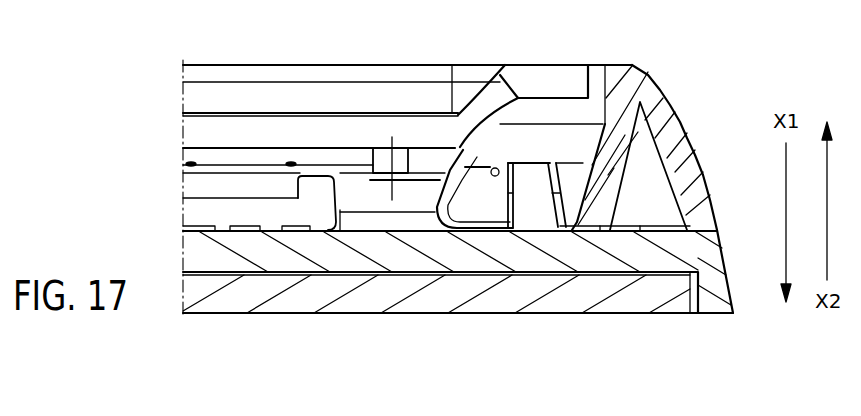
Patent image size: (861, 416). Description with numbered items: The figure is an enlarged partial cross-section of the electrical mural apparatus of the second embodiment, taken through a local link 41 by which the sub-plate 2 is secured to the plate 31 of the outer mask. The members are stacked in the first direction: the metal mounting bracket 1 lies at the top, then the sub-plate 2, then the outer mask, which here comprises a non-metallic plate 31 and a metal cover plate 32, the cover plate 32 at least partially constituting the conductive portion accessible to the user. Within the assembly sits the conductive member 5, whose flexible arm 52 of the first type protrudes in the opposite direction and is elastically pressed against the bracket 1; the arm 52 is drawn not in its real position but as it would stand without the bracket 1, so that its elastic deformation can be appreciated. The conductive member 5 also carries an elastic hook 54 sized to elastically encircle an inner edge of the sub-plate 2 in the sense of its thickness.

The metal mounting bracket 1 is at (495, 98).
The sub-plate 2 is at (656, 67).
The conductive member 5 is at (652, 212).
The local link 41 is at (533, 178).
The flexible arm of a first type 52 is at (462, 150).
The elastic hook 54 is at (462, 230).
The plate 31 is at (630, 252).
The metal cover plate 32 is at (545, 278).